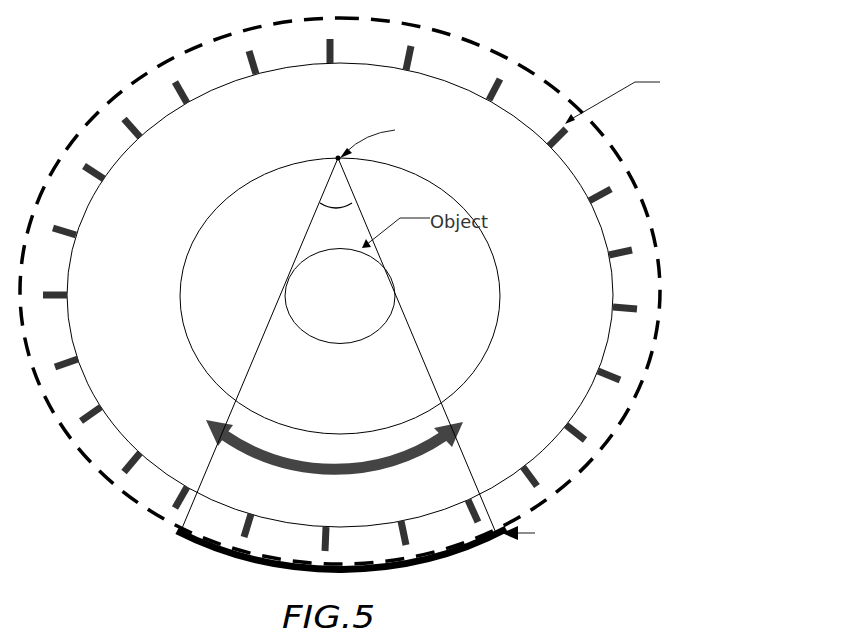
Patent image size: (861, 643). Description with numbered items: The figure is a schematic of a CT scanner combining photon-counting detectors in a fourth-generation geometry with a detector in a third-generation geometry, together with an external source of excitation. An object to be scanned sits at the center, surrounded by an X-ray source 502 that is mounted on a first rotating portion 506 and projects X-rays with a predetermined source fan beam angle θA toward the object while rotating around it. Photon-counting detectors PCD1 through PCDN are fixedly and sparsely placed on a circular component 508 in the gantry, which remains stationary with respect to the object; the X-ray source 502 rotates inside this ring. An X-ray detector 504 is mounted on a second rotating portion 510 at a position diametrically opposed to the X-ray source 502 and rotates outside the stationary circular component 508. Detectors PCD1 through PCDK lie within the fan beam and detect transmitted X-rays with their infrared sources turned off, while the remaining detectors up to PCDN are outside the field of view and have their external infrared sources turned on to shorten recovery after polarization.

The X-ray source 502 is at (338, 311).
The X-ray detector 504 is at (395, 547).
The first rotating portion 506 is at (497, 278).
The circular component 508 is at (590, 203).
The second rotating portion 510 is at (608, 147).
The photon-counting detector PCD1 is at (180, 530).
The photon-counting detector PCDK is at (467, 540).
The photon-counting detector PCDN is at (133, 468).